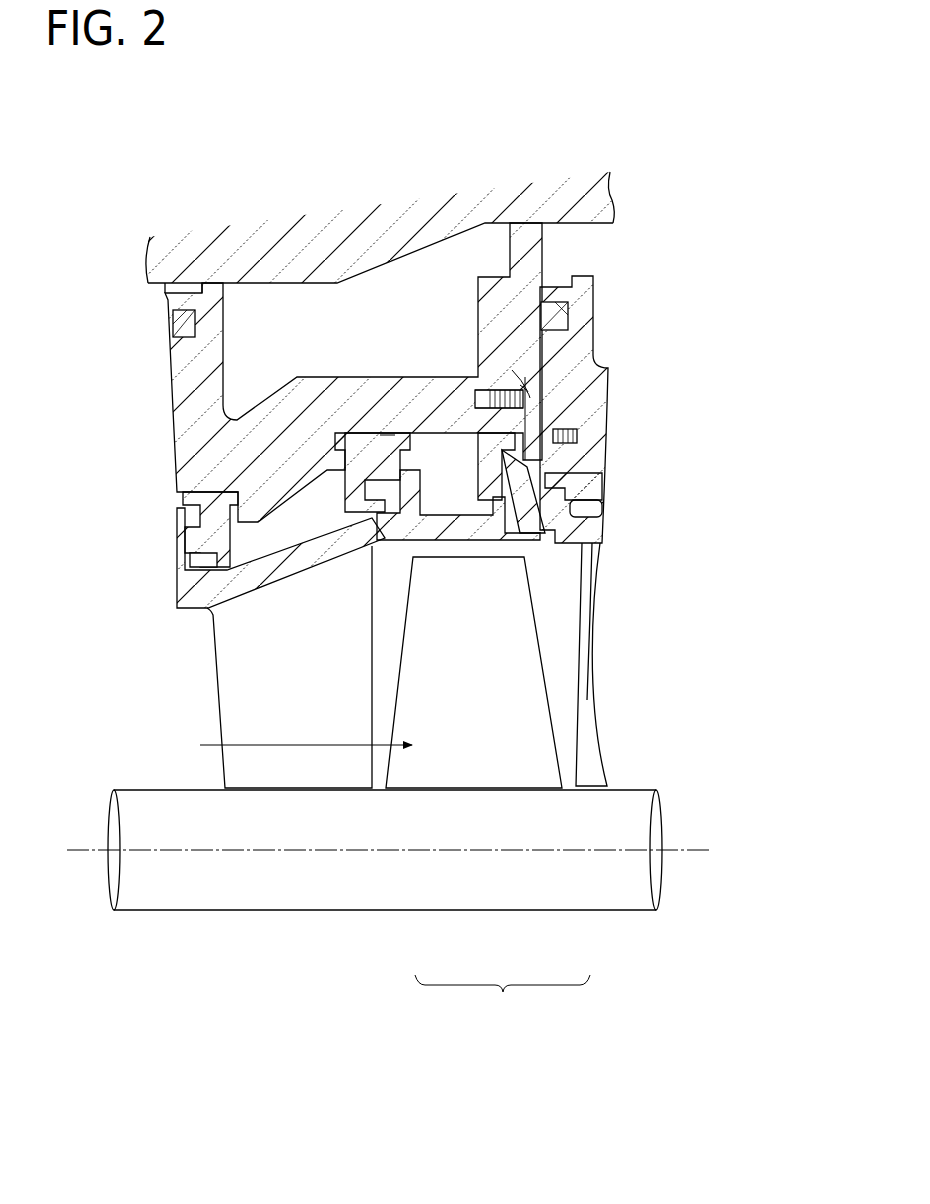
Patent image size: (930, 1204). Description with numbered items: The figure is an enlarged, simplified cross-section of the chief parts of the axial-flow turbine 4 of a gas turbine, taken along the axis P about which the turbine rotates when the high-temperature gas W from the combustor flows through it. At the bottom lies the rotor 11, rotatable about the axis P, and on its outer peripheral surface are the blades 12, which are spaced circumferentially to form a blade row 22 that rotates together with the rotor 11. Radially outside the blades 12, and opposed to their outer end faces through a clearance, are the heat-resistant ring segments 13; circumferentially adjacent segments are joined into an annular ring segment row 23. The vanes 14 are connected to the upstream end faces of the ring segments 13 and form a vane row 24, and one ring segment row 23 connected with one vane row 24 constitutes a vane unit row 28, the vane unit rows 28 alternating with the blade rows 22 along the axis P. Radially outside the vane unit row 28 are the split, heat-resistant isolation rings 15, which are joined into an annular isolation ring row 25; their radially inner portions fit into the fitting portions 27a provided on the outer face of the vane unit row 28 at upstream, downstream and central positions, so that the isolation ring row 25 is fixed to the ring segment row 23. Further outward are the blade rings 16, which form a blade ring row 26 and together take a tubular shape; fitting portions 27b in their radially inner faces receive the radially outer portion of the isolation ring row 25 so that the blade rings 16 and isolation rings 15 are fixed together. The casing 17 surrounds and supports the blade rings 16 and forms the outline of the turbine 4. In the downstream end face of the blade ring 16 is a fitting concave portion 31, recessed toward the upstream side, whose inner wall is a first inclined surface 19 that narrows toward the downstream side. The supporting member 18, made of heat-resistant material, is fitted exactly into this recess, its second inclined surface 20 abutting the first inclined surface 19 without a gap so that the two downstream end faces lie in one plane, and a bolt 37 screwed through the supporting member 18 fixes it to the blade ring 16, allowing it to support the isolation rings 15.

The turbine 4 is at (692, 170).
The casing 17 is at (392, 215).
The blade ring 16 is at (540, 248).
The blade ring row 26 is at (429, 372).
The isolation ring 15 is at (360, 430).
The isolation ring row 25 is at (377, 431).
The first inclined surface 19 is at (527, 380).
The second inclined surface 20 is at (525, 385).
The bolt 37 is at (508, 400).
The supporting member 18 is at (560, 420).
The fitting concave portion 31 is at (565, 437).
The fitting portion 27a is at (217, 580).
The fitting portion 27b is at (378, 432).
The blade 12 is at (527, 732).
The blade row 22 is at (459, 665).
The rotor 11 is at (240, 895).
The vane 14 is at (353, 643).
The vane row 24 is at (449, 711).
The ring segment 13 is at (470, 540).
The ring segment row 23 is at (487, 756).
The vane unit row 28 is at (502, 1003).
The axis P is at (80, 855).
The high-temperature gas W is at (198, 742).